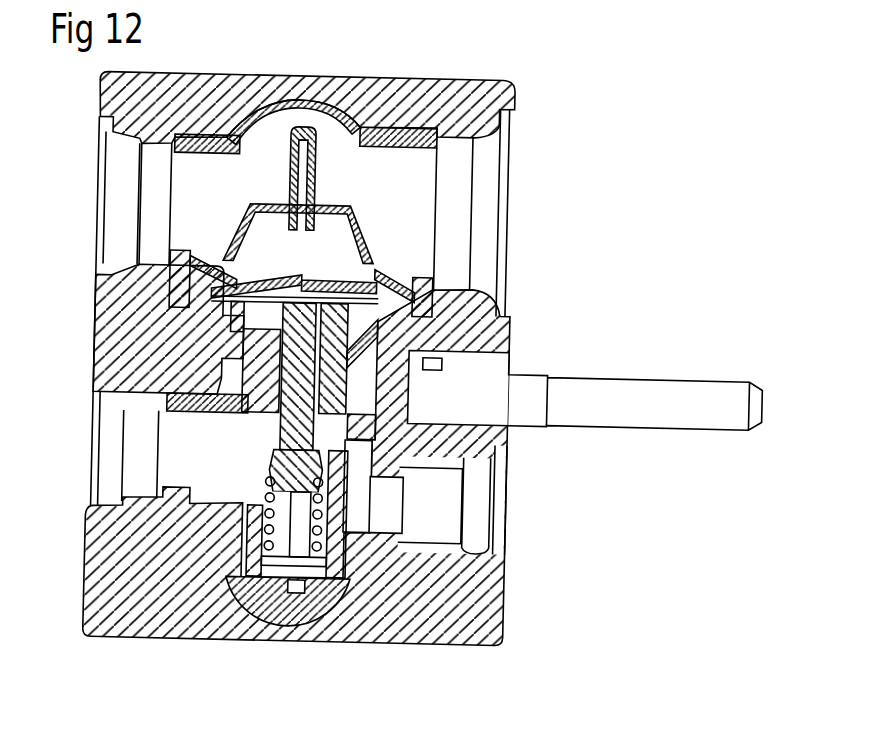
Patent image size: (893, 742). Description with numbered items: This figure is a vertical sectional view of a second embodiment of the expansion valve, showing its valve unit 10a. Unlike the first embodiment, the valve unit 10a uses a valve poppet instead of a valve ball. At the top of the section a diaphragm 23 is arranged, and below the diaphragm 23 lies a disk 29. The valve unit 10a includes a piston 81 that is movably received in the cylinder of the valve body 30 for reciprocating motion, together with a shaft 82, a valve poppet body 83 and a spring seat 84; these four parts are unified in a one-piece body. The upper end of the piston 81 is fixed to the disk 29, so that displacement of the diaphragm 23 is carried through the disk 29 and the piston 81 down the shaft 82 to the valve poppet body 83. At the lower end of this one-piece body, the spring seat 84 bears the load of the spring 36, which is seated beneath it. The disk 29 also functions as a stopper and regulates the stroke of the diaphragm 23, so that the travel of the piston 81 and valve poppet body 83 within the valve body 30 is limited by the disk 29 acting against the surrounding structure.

The valve unit 10a is at (367, 238).
The diaphragm 23 is at (232, 272).
The disk 29 is at (240, 335).
The piston 81 is at (280, 388).
The shaft 82 is at (310, 418).
The valve poppet body 83 is at (275, 471).
The spring seat 84 is at (276, 614).
The spring 36 is at (343, 506).
The valve body 30 is at (397, 443).